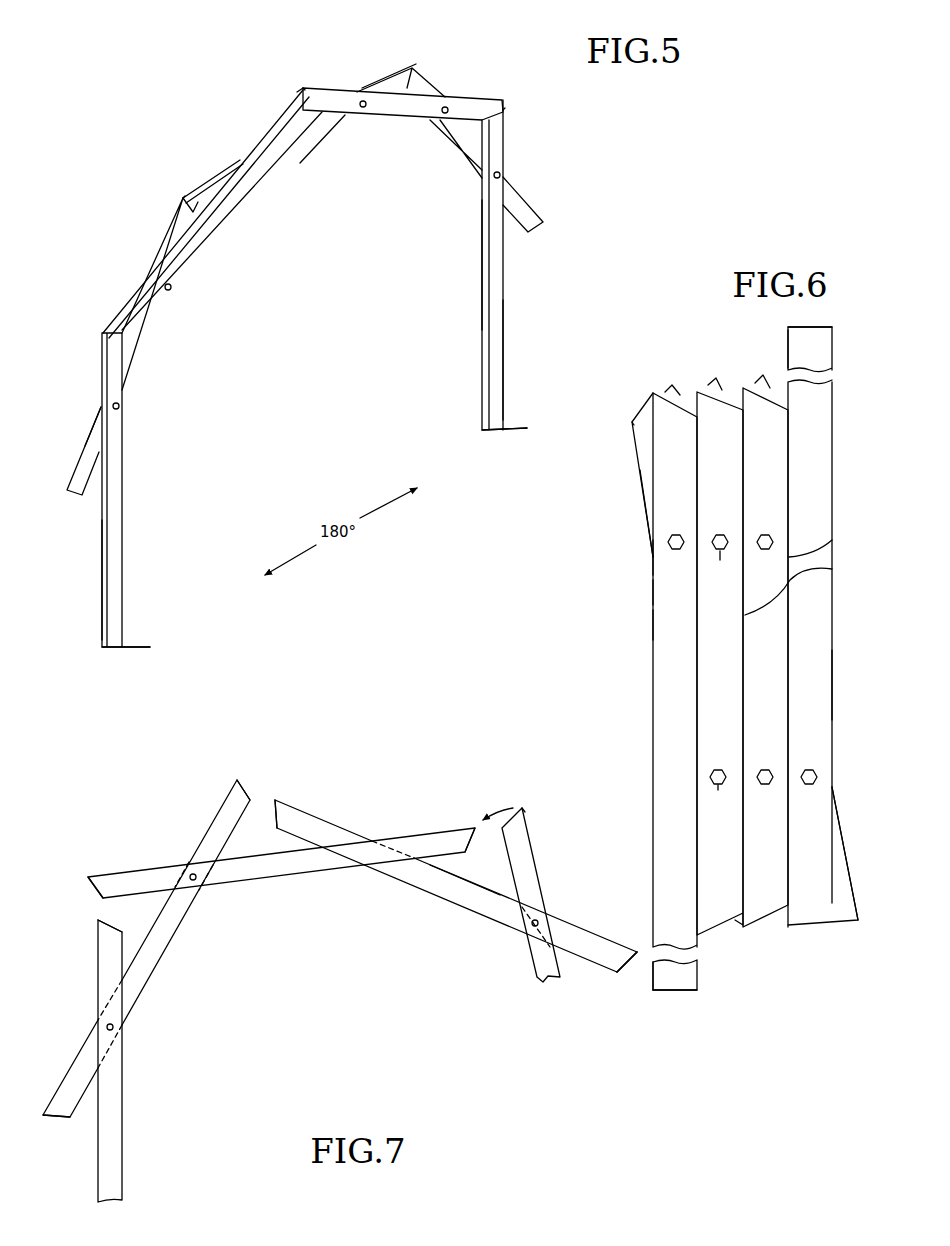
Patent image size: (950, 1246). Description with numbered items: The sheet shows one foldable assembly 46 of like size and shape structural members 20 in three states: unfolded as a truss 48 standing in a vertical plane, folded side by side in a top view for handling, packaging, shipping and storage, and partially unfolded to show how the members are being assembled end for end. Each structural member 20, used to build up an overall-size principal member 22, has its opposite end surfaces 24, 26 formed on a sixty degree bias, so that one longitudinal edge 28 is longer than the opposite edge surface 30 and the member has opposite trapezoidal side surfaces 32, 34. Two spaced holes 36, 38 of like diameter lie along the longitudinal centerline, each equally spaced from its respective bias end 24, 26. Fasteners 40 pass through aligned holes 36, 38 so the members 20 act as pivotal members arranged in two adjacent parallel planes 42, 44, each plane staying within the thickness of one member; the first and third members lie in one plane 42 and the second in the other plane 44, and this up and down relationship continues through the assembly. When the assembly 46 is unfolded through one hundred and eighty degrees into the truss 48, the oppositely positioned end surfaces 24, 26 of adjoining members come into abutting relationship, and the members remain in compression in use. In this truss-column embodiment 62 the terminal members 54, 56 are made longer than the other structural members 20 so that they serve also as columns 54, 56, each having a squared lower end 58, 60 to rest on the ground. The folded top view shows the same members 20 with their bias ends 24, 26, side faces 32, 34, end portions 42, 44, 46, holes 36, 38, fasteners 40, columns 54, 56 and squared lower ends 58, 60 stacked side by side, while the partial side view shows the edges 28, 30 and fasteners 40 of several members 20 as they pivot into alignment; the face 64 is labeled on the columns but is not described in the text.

In FIG. 5, the like size and shape structural member 20 is at (304, 146).
In FIG. 6, the like size and shape structural member 20 is at (638, 420).
In FIG. 7, the like size and shape structural member 20 is at (210, 822).
In FIG. 5, the principal member 22 is at (350, 88).
In FIG. 6, the principal member 22 is at (652, 590).
In FIG. 7, the principal member 22 is at (338, 824).
In FIG. 5, the end surface 24 is at (182, 199).
In FIG. 6, the end surface 24 is at (718, 395).
In FIG. 7, the end surface 24 is at (237, 780).
In FIG. 5, the end surface 26 is at (185, 196).
In FIG. 6, the end surface 26 is at (632, 422).
In FIG. 7, the end surface 26 is at (278, 801).
In FIG. 5, the longitudinal edge surface 28 is at (97, 411).
In FIG. 6, the longitudinal edge surface 28 is at (834, 569).
In FIG. 7, the longitudinal edge surface 28 is at (572, 932).
In FIG. 5, the opposite edge surface 30 is at (172, 290).
In FIG. 6, the opposite edge surface 30 is at (832, 540).
In FIG. 5, the trapezoidal side surface 32 is at (137, 358).
In FIG. 6, the trapezoidal side surface 32 is at (726, 480).
In FIG. 7, the trapezoidal side surface 32 is at (471, 960).
In FIG. 5, the trapezoidal side surface 34 is at (84, 447).
In FIG. 6, the trapezoidal side surface 34 is at (641, 468).
In FIG. 6, the hole 36 is at (720, 534).
In FIG. 7, the hole 36 is at (603, 968).
In FIG. 6, the hole 38 is at (718, 768).
In FIG. 5, the fastener 40 is at (502, 172).
In FIG. 6, the fastener 40 is at (721, 552).
In FIG. 7, the fastener 40 is at (116, 1028).
In FIG. 6, the adjacent parallel plane 42 is at (648, 520).
In FIG. 6, the adjacent parallel plane 44 is at (652, 557).
In FIG. 6, the foldable assembly 46 is at (652, 622).
In FIG. 5, the truss 48 is at (270, 126).
In FIG. 7, the truss 48 is at (192, 914).
In FIG. 5, the terminal member / column 54 is at (122, 480).
In FIG. 6, the terminal member / column 54 is at (652, 757).
In FIG. 5, the terminal member / column 56 is at (504, 300).
In FIG. 6, the terminal member / column 56 is at (836, 470).
In FIG. 5, the squared lower end 58 is at (102, 645).
In FIG. 6, the squared lower end 58 is at (688, 991).
In FIG. 5, the squared lower end 60 is at (504, 425).
In FIG. 6, the squared lower end 60 is at (832, 329).
In FIG. 7, the squared lower end 60 is at (52, 1100).
In FIG. 5, the truss-column embodiment 62 is at (481, 274).
In FIG. 6, the truss-column embodiment 62 is at (836, 690).
In FIG. 5, the outer face 64 is at (504, 370).
In FIG. 6, the outer face 64 is at (790, 342).